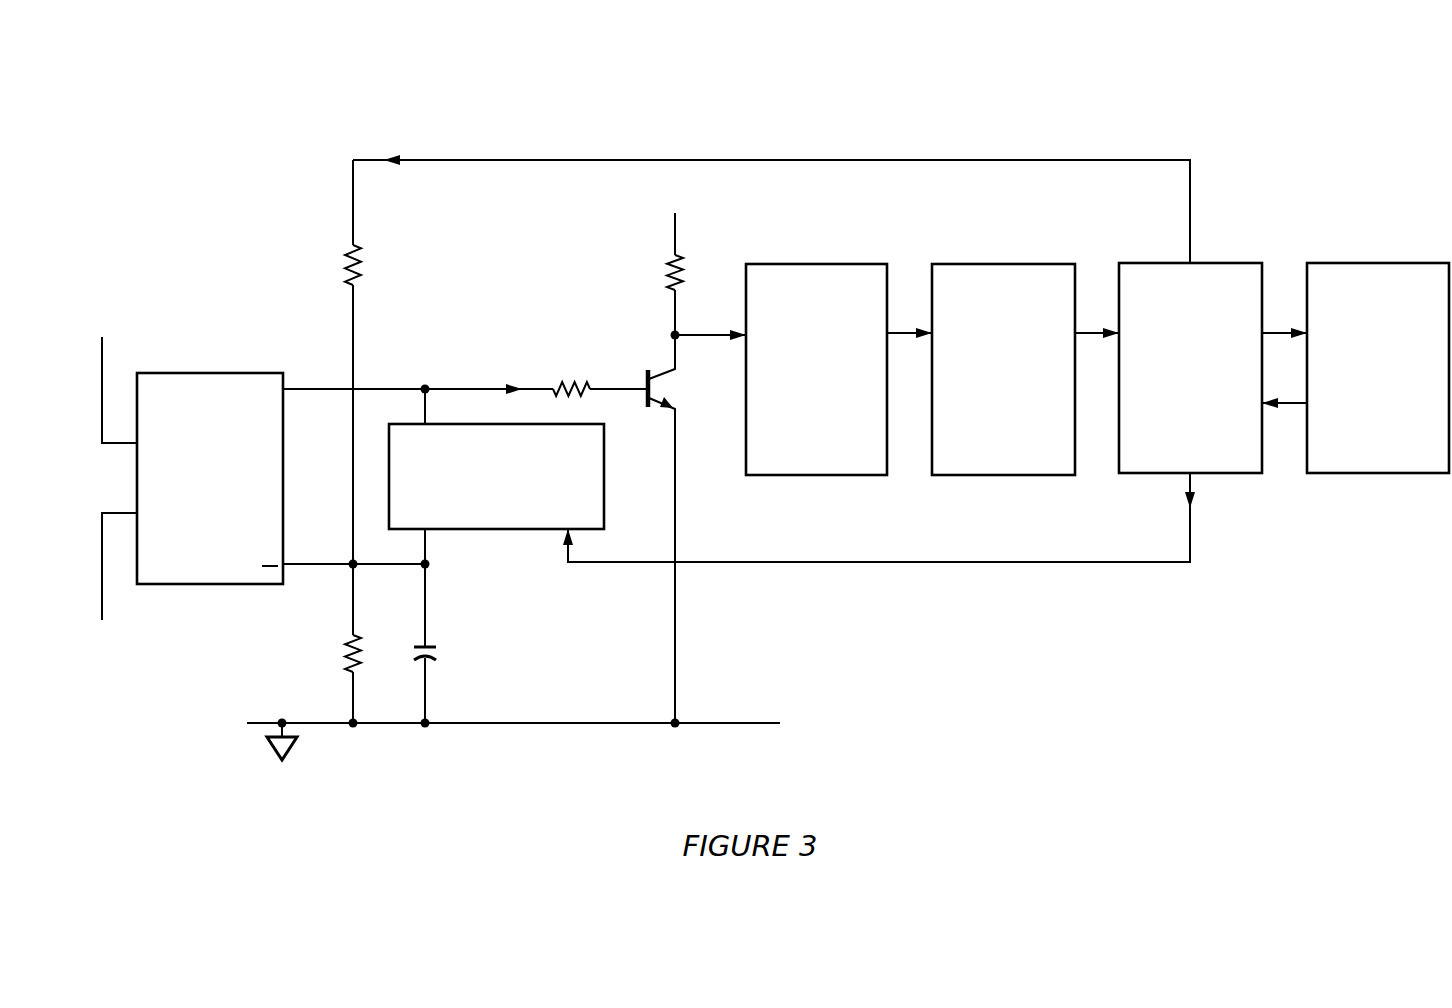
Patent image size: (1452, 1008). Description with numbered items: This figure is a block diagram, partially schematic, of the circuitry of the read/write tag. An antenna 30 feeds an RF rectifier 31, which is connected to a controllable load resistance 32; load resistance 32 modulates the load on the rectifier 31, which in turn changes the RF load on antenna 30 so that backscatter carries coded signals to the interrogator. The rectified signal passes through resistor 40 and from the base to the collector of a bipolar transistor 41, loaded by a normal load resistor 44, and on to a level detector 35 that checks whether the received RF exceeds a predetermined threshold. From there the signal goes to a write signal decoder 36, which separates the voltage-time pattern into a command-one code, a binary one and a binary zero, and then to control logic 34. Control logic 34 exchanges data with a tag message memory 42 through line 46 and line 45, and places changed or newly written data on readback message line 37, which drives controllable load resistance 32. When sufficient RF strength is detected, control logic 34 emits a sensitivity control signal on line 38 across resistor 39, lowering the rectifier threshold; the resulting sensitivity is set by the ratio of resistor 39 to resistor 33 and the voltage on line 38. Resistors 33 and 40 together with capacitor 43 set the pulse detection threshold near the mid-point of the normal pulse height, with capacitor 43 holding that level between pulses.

The antenna 30 is at (102, 365).
The RF rectifier 31 is at (208, 373).
The controllable load resistance 32 is at (604, 476).
The resistor 33 is at (348, 649).
The control logic 34 is at (1190, 368).
The level detector 35 is at (816, 369).
The write signal decoder 36 is at (1003, 369).
The readback message line 37 is at (1192, 550).
The sensitivity control signal line 38 is at (995, 160).
The resistor 39 is at (347, 264).
The resistor 40 is at (578, 385).
The bipolar transistor 41 is at (662, 390).
The tag message memory 42 is at (1378, 263).
The capacitor 43 is at (438, 655).
The resistor 44 is at (672, 270).
The memory output line 45 is at (1282, 405).
The line 46 is at (1290, 333).